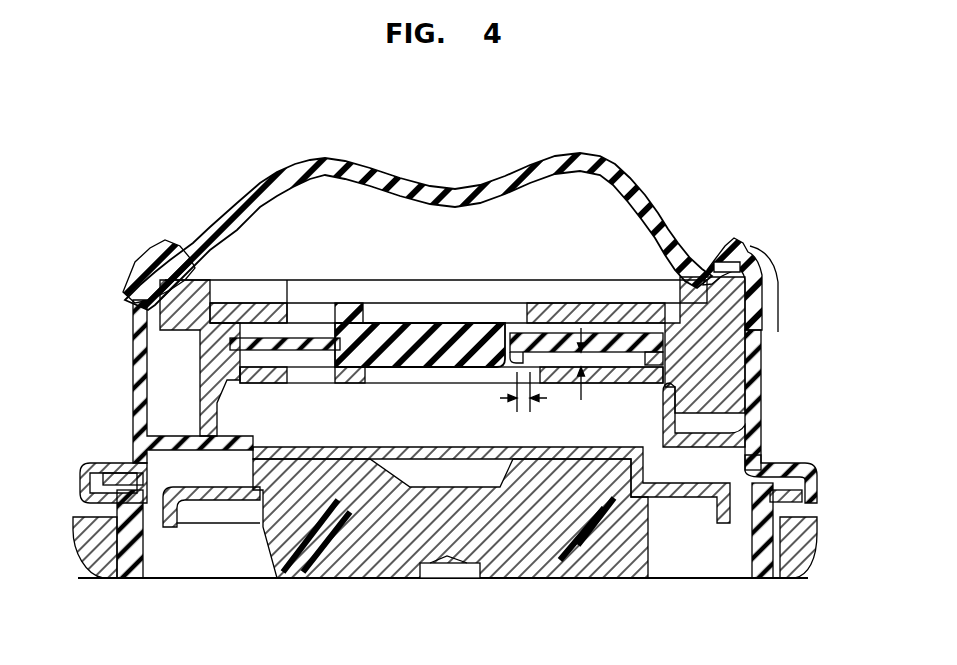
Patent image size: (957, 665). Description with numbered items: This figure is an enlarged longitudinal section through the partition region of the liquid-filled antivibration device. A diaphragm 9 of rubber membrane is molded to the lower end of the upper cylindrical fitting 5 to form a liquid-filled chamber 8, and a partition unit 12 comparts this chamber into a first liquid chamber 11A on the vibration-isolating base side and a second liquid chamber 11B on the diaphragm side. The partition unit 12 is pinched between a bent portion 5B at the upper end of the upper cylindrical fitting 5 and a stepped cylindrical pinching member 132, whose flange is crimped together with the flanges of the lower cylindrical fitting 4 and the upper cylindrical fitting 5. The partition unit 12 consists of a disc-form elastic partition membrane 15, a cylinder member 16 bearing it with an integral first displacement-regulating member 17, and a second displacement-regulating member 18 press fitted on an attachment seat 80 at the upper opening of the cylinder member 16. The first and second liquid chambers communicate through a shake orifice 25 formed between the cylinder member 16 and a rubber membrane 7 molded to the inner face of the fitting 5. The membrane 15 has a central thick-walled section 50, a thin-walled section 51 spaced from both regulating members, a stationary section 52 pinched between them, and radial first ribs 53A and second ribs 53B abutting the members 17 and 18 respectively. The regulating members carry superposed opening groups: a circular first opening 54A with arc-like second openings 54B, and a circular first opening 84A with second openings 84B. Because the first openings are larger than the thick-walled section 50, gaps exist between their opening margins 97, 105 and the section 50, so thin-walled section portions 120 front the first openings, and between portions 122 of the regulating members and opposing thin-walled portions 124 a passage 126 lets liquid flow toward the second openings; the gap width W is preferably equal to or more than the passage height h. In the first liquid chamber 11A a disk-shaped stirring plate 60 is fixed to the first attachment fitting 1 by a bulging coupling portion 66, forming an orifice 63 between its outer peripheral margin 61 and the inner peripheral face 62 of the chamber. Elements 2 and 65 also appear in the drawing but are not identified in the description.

The first attachment fitting 1 is at (537, 560).
The mounting flange 2 is at (108, 532).
The lower cylindrical fitting 4 is at (762, 525).
The upper cylindrical fitting 5 is at (764, 358).
The bent portion 5B is at (757, 277).
The rubber membrane 7 is at (140, 417).
The liquid-filled chamber 8 is at (290, 195).
The diaphragm 9 is at (598, 152).
The first liquid chamber 11A is at (643, 413).
The second liquid chamber 11B is at (612, 205).
The partition unit 12 is at (270, 217).
The elastic partition membrane 15 is at (383, 320).
The cylinder member 16 is at (727, 300).
The first displacement-regulating member 17 is at (234, 385).
The second displacement-regulating member 18 is at (660, 287).
The orifice 25 is at (182, 400).
The thick-walled section 50 is at (472, 330).
The thin-walled section 51 is at (232, 295).
The stationary section 52 is at (230, 343).
The first ribs 53A is at (342, 385).
The second ribs 53B is at (352, 322).
The first opening 54A is at (413, 383).
The second openings 54B is at (307, 380).
The stirring plate 60 is at (567, 442).
The outer peripheral margin 61 is at (160, 505).
The inner peripheral face 62 is at (95, 482).
The orifice on the first liquid chamber side 63 is at (153, 512).
The base portion 65 is at (590, 500).
The coupling portion 66 is at (273, 443).
The attachment seat 80 is at (197, 240).
The first opening 84A is at (427, 301).
The second openings 84B is at (305, 320).
The opening margin 97 is at (346, 395).
The opening margin 105 is at (367, 320).
The thin-walled section portions 120 is at (515, 350).
The portions of the displacement-regulating members 122 is at (555, 380).
The portions of the thin-walled section 124 is at (543, 340).
The passage 126 is at (600, 465).
The pinching member 132 is at (752, 453).
The width of the gap W is at (520, 405).
The height of the passage h is at (583, 376).